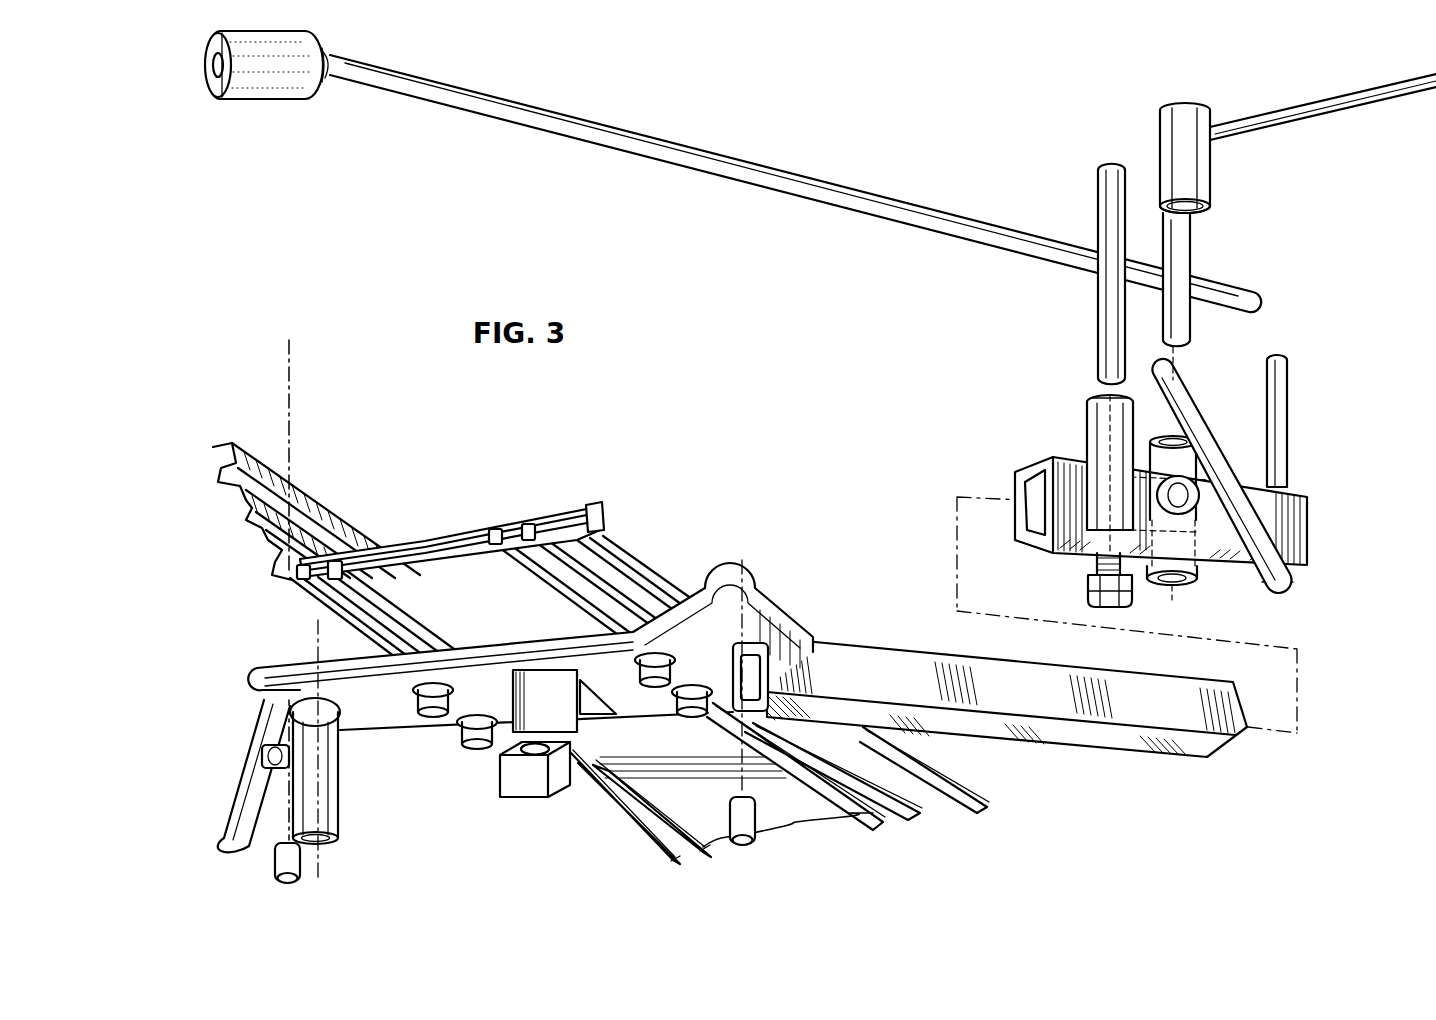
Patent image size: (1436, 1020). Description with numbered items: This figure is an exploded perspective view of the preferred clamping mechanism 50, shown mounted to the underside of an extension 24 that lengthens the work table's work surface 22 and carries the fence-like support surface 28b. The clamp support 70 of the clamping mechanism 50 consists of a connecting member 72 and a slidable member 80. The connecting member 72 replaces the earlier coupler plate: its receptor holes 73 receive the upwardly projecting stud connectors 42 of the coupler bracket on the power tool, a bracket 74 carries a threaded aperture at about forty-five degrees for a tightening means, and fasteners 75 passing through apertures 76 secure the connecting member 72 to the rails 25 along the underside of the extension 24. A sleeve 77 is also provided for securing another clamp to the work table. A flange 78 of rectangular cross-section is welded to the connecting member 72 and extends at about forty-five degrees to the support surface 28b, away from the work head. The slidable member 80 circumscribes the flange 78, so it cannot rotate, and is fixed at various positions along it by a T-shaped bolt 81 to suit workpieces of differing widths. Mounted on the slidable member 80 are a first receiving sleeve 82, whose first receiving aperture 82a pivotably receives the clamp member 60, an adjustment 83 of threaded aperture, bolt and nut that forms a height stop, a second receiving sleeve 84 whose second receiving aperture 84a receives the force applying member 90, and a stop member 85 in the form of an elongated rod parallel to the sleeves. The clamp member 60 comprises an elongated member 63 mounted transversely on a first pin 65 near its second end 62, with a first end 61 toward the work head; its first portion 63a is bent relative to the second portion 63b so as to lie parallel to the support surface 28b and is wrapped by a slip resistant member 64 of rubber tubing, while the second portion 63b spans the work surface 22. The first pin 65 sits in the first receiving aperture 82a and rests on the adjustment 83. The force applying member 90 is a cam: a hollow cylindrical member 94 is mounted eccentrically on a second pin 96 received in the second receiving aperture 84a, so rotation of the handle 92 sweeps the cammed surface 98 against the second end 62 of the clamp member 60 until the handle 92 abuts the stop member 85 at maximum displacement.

The work surface 22 is at (407, 543).
The extension 24 is at (553, 505).
The rails 25 is at (385, 611).
The support surface 28b is at (290, 403).
The stud connectors 42 is at (275, 861).
The clamping mechanism 50 is at (1072, 573).
The clamp member 60 is at (711, 171).
The first end 61 is at (208, 93).
The second end 62 is at (1236, 218).
The elongated member 63 is at (779, 182).
The first portion 63a is at (298, 98).
The second portion 63b is at (497, 103).
The slip resistant member 64 is at (243, 85).
The first pin 65 is at (1105, 326).
The clamp support 70 is at (601, 654).
The connecting member 72 is at (378, 724).
The receptor holes 73 is at (265, 663).
The bracket 74 is at (508, 792).
The fasteners 75 is at (494, 753).
The apertures 76 is at (413, 703).
The sleeve 77 is at (263, 732).
The flange 78 is at (1129, 738).
The slidable member 80 is at (1193, 538).
The T-shaped bolt 81 is at (1289, 583).
The first receiving sleeve 82 is at (1081, 456).
The first receiving aperture 82a is at (1096, 392).
The adjustment 83 is at (1088, 598).
The second receiving sleeve 84 is at (1193, 587).
The second receiving aperture 84a is at (1186, 415).
The stop member 85 is at (1288, 437).
The force applying member 90 is at (1275, 199).
The handle 92 is at (1315, 103).
The hollow cylindrical member 94 is at (1183, 158).
The second pin 96 is at (1191, 252).
The cammed surface 98 is at (1208, 196).